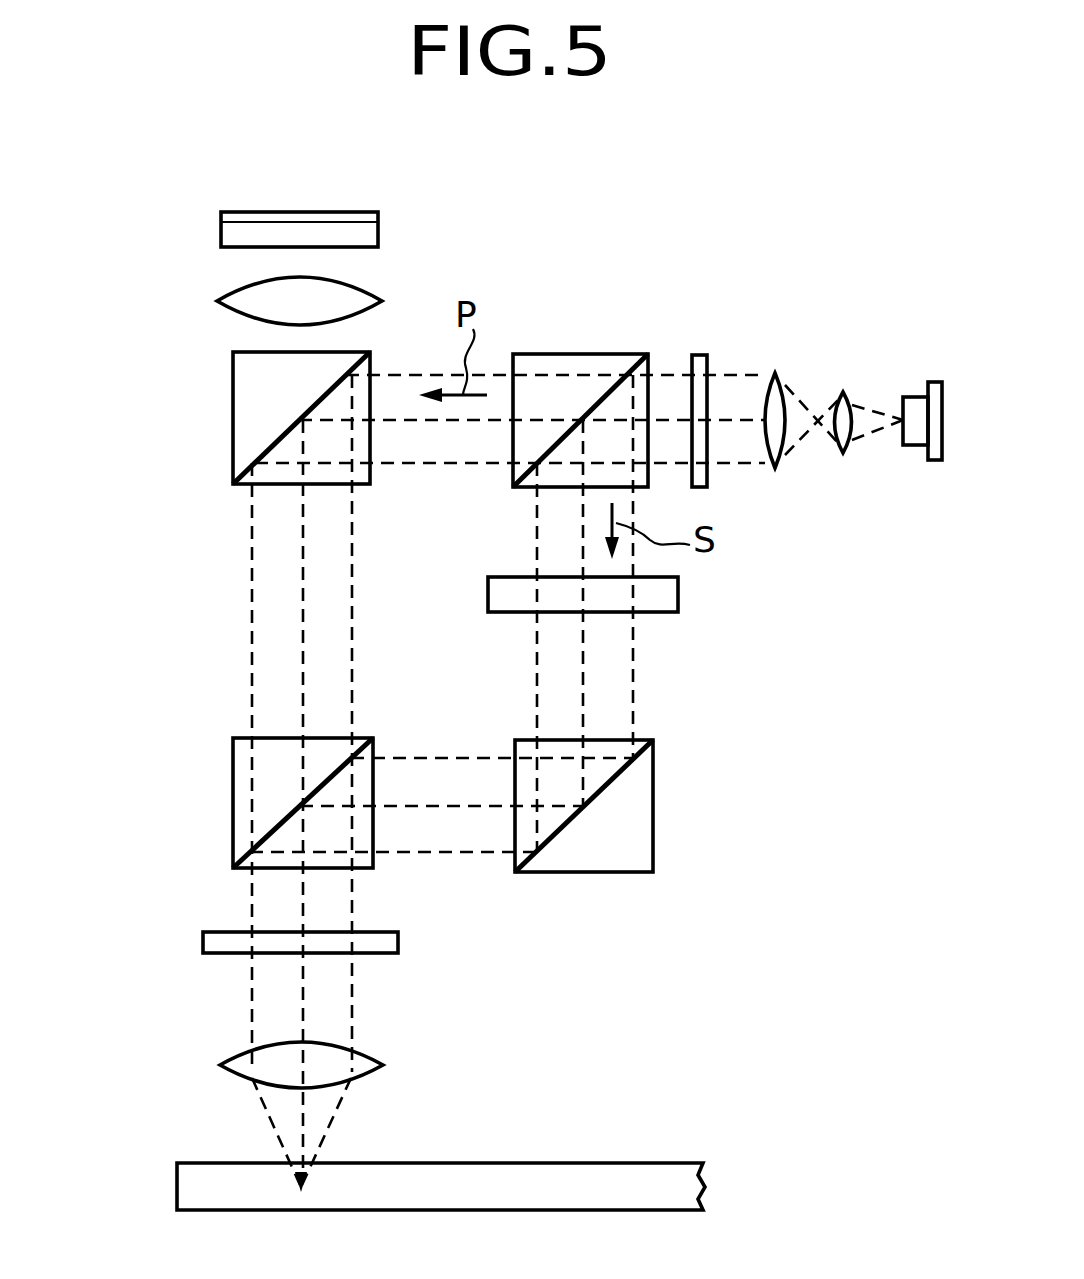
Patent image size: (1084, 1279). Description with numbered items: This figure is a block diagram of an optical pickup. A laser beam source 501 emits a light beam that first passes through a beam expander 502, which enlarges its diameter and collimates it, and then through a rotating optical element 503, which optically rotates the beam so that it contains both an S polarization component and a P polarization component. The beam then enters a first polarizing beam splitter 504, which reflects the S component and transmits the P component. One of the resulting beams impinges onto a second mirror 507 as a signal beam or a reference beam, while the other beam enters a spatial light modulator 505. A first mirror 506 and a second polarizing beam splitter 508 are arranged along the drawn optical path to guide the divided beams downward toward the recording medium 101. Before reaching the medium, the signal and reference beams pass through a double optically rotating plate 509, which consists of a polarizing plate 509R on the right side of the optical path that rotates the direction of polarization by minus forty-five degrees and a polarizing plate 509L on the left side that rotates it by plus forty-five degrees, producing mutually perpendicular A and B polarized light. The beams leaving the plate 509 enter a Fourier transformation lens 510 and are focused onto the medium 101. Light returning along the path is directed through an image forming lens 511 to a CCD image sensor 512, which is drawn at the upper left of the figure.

The optical recording medium 101 is at (177, 1185).
The laser beam source 501 is at (916, 397).
The beam expander 502 is at (852, 371).
The rotating optical element 503 is at (702, 355).
The first polarizing beam splitter 504 is at (585, 354).
The spatial light modulator 505 is at (678, 593).
The first mirror 506 is at (653, 825).
The second mirror 507 is at (233, 412).
The second polarizing beam splitter 508 is at (233, 797).
The double optically rotating plate 509 is at (225, 953).
The polarizing plate disposed on the left side 509L is at (226, 940).
The polarizing plate disposed on the right side 509R is at (378, 948).
The Fourier transformation lens 510 is at (220, 1065).
The image forming lens 511 is at (217, 303).
The CCD image sensor 512 is at (221, 222).